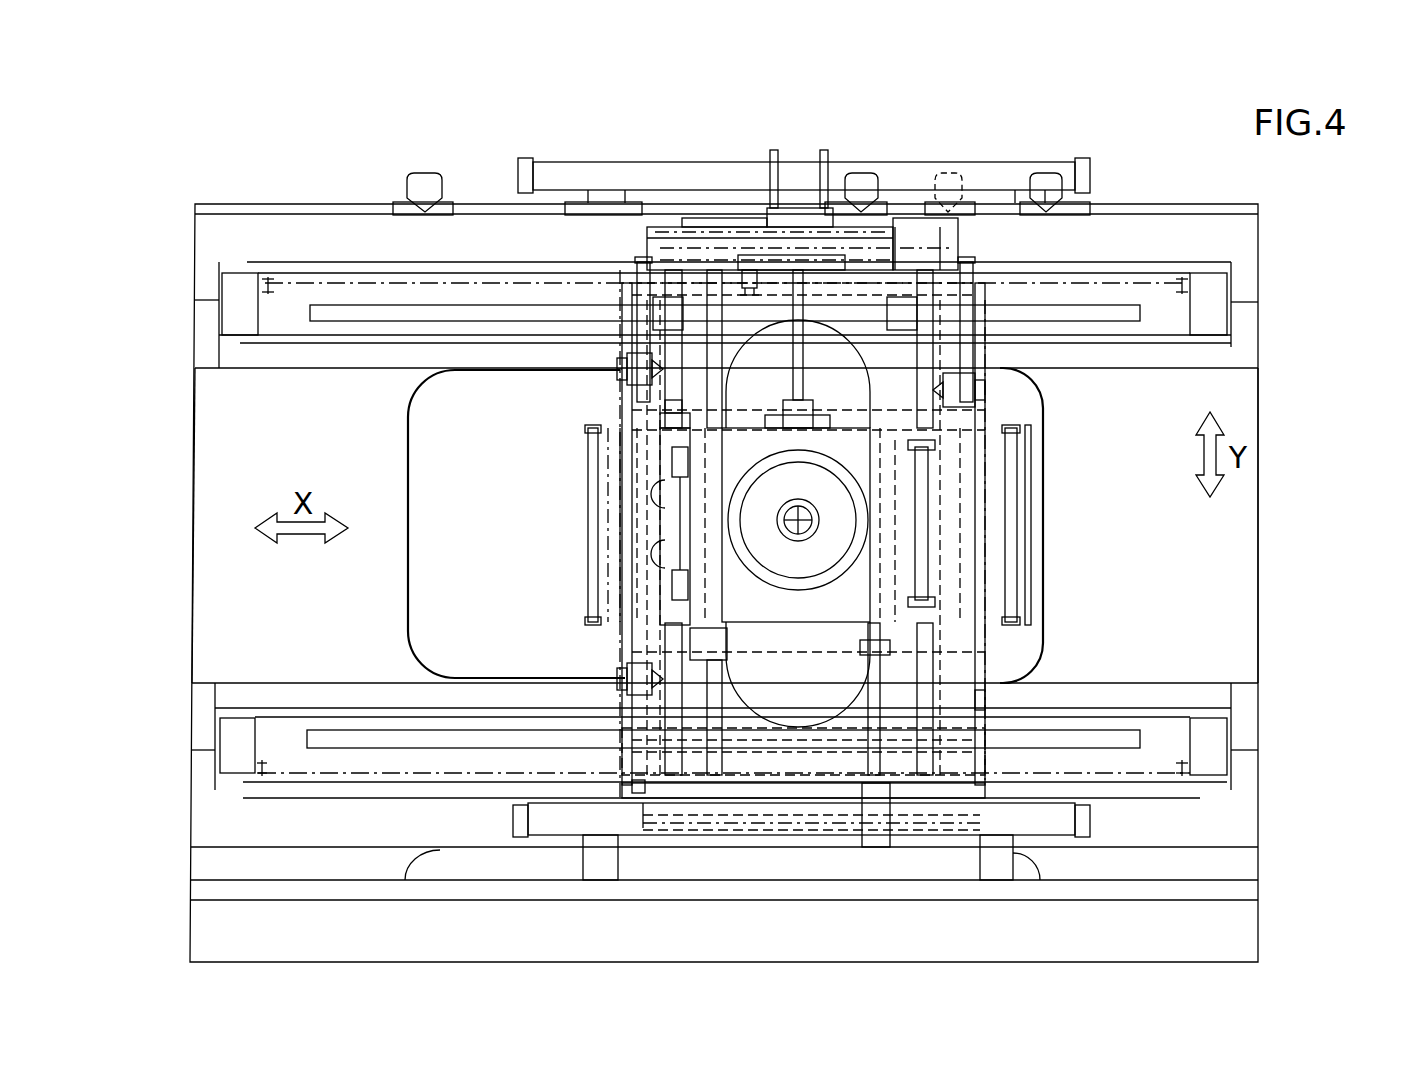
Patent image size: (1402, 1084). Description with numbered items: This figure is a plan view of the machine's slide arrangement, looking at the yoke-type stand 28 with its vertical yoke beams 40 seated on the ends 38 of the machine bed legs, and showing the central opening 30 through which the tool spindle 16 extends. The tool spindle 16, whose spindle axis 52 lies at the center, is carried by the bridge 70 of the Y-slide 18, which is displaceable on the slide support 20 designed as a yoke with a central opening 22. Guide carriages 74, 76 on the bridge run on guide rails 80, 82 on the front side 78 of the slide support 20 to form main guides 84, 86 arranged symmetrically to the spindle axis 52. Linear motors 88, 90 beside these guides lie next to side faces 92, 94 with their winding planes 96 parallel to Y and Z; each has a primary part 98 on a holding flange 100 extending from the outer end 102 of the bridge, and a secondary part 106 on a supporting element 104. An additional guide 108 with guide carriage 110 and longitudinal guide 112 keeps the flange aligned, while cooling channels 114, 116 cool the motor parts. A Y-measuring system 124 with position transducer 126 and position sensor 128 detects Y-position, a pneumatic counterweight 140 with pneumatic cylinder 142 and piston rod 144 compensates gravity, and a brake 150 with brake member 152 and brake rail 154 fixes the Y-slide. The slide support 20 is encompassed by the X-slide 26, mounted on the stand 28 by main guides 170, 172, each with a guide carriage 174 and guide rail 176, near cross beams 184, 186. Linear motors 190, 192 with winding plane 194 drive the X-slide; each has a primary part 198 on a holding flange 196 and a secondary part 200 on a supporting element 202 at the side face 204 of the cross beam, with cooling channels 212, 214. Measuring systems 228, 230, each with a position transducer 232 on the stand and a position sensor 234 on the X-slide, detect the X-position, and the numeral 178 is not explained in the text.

The tool spindle 16 is at (840, 556).
The Y-slide 18 is at (945, 440).
The slide support 20 is at (908, 702).
The central opening 22 is at (855, 622).
The X-slide 26 is at (940, 760).
The stand 28 is at (218, 393).
The central opening 30 is at (412, 660).
The ends 38 is at (225, 957).
The vertical yoke beams 40 is at (235, 492).
The spindle axis 52 is at (835, 518).
The bridge 70 is at (766, 760).
The guide carriage 74 is at (620, 470).
The guide carriage 76 is at (985, 466).
The front side 78 is at (803, 690).
The guide rail 80 is at (640, 415).
The guide rail 82 is at (935, 650).
The main guide 84 is at (650, 430).
The main guide 86 is at (985, 430).
The linear motor 88 is at (590, 633).
The linear motor 90 is at (1035, 630).
The side face 92 is at (625, 780).
The side face 94 is at (1000, 782).
The winding plane 96 is at (605, 505).
The primary part 98 is at (610, 568).
The holding flange 100 is at (590, 598).
The outer end 102 is at (598, 528).
The supporting element 104 is at (625, 720).
The secondary part 106 is at (640, 740).
The additional guide 108 is at (995, 357).
The guide carriage 110 is at (990, 360).
The longitudinal guide 112 is at (985, 410).
The cooling channels 114 is at (595, 452).
The cooling channels 116 is at (640, 652).
The Y-measuring system 124 is at (900, 488).
The position transducer 126 is at (985, 600).
The position sensor 128 is at (970, 490).
The pneumatic counterweight 140 is at (793, 205).
The pneumatic cylinder 142 is at (832, 270).
The piston rod 144 is at (806, 356).
The brake 150 is at (718, 410).
The brake member 152 is at (625, 372).
The brake rail 154 is at (705, 692).
The main guide 170 is at (963, 835).
The main guide 172 is at (692, 300).
The guide carriage 174 is at (911, 778).
The guide rail 176 is at (1138, 740).
The rail slot 178 is at (275, 318).
The cross beam 184 is at (1005, 698).
The cross beam 186 is at (602, 357).
The linear motor 190 is at (992, 798).
The linear motor 192 is at (635, 230).
The winding plane 194 is at (742, 270).
The holding flange 196 is at (895, 270).
The primary part 198 is at (965, 250).
The secondary part 200 is at (348, 272).
The supporting element 202 is at (277, 310).
The side face 204 is at (1190, 262).
The cooling channels 212 is at (940, 270).
The cooling channels 214 is at (305, 282).
The measuring system 228 is at (565, 835).
The measuring system 230 is at (658, 170).
The position transducer 232 is at (600, 828).
The position sensor 234 is at (855, 850).